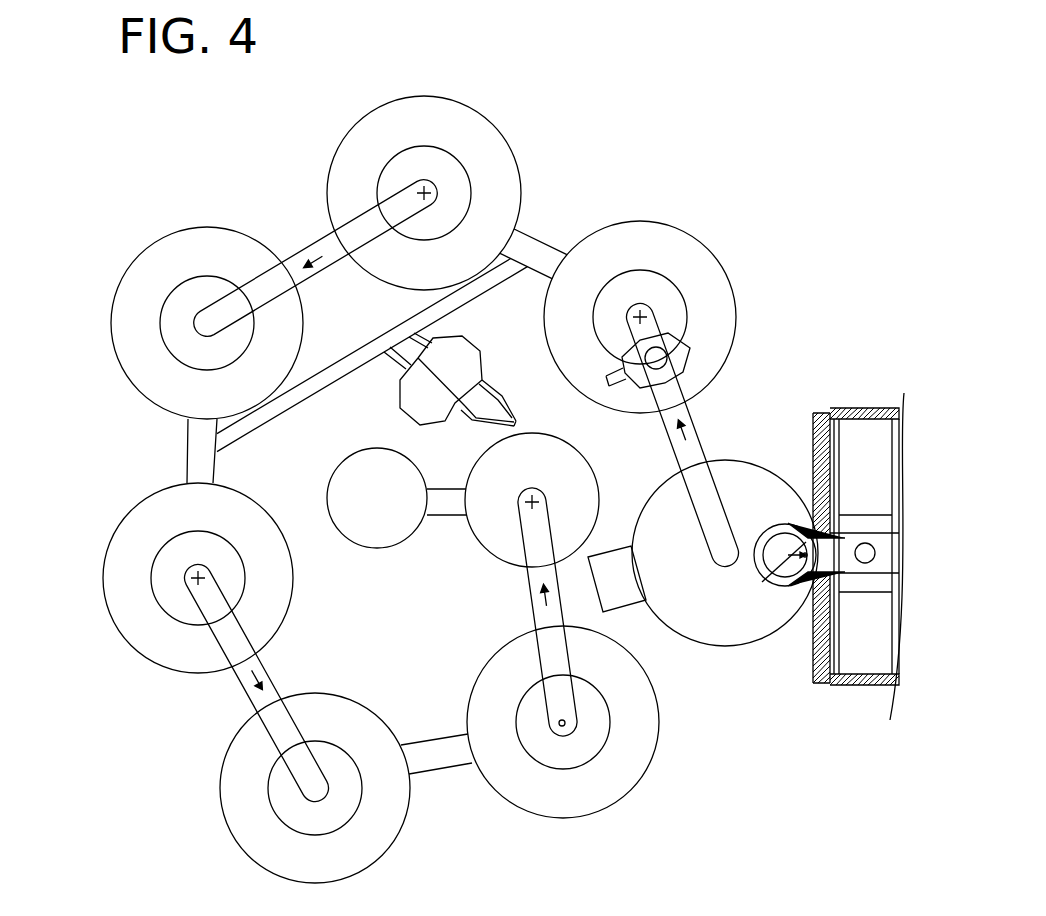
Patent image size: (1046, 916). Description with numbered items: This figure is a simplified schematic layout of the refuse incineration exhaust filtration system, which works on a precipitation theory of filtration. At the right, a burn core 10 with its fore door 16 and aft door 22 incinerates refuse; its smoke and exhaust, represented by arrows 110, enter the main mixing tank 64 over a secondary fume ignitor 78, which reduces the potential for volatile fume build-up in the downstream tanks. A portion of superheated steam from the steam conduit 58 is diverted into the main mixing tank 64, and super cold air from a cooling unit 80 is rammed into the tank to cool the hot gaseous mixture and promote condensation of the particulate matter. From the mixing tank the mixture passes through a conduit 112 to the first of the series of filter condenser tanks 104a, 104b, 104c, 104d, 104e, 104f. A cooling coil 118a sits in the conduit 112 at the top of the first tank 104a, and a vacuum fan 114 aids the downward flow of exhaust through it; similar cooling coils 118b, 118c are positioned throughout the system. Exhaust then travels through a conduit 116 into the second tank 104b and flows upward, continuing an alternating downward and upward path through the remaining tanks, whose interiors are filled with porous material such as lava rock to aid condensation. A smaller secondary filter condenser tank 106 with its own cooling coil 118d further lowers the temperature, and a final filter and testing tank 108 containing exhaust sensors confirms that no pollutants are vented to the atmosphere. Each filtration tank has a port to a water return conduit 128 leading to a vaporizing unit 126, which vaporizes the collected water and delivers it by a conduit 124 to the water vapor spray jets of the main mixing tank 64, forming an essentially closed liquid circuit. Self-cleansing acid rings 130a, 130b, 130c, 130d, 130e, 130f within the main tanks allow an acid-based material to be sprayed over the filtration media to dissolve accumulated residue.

The burn core 10 is at (851, 483).
The fore door 16 is at (857, 686).
The aft door 22 is at (866, 407).
The steam conduit 58 is at (782, 524).
The main mixing tank 64 is at (767, 467).
The secondary fume ignitor 78 is at (760, 580).
The cooling unit 80 is at (629, 612).
The filter condenser tank 104a is at (720, 257).
The filter condenser tank 104b is at (347, 130).
The filter condenser tank 104c is at (133, 262).
The filter condenser tank 104d is at (130, 650).
The filter condenser tank 104e is at (247, 862).
The filter condenser tank 104f is at (487, 787).
The secondary filter condenser tank 106 is at (476, 551).
The final filter and testing tank 108 is at (348, 547).
The exhaust 110 is at (797, 588).
The conduit 112 is at (697, 425).
The vacuum fan 114 is at (687, 343).
The conduit 116 is at (540, 244).
The cooling coil 118a is at (650, 317).
The cooling coil 118b is at (433, 188).
The cooling coil 118c is at (203, 580).
The cooling coil 118d is at (541, 489).
The conduit 124 is at (520, 418).
The vaporizing unit 126 is at (480, 351).
The water return conduit 128 is at (397, 368).
The self-cleansing acid ring 130a is at (620, 271).
The self-cleansing acid ring 130b is at (447, 146).
The self-cleansing acid ring 130c is at (228, 277).
The self-cleansing acid ring 130d is at (152, 557).
The self-cleansing acid ring 130e is at (277, 767).
The self-cleansing acid ring 130f is at (580, 768).